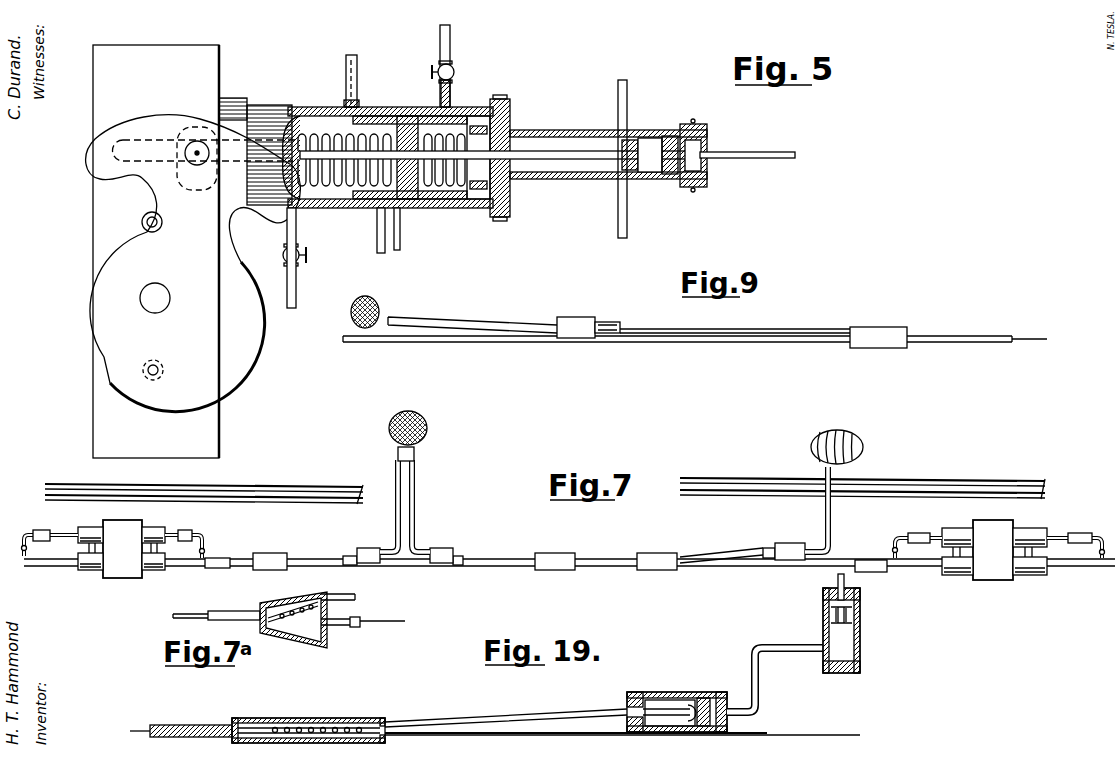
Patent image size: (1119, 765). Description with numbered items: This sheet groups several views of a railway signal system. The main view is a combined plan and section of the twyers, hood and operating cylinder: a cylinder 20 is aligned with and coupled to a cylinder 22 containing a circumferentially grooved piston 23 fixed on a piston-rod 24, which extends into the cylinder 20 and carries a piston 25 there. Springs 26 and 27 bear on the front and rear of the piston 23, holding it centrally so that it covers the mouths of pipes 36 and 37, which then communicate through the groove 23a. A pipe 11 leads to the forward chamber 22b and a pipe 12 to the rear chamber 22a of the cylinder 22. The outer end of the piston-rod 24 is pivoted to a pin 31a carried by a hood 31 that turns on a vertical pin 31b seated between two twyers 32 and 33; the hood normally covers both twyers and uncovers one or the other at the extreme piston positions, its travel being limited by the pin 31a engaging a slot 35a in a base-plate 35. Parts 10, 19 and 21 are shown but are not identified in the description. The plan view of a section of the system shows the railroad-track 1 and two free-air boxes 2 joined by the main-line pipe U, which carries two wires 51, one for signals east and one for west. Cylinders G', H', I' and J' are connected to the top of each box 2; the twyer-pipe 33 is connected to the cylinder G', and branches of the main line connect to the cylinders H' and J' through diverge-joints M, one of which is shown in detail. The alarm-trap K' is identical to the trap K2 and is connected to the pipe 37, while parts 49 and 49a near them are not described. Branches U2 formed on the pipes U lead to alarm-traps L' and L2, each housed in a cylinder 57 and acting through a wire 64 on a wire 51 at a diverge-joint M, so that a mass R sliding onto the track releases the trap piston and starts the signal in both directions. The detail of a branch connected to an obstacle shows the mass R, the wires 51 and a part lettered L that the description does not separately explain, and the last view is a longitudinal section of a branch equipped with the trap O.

In FIG. 5, the base-plate 35 is at (156, 251).
In FIG. 5, the hood 31 is at (193, 263).
In FIG. 5, the pin 31a is at (195, 152).
In FIG. 5, the vertical pin 31b is at (158, 297).
In FIG. 5, the twyer 32 is at (143, 227).
In FIG. 5, the twyer 33 is at (143, 372).
In FIG. 5, the slot 35a is at (117, 150).
In FIG. 5, the cylinder 22 is at (390, 147).
In FIG. 5, the rear chamber 22a is at (336, 120).
In FIG. 5, the forward chamber 22b is at (532, 84).
In FIG. 5, the circumferential grooved piston 23 is at (402, 206).
In FIG. 5, the circumferential groove 23a is at (421, 106).
In FIG. 5, the piston-rod 24 is at (321, 147).
In FIG. 5, the piston 25 is at (646, 180).
In FIG. 5, the spring 26 is at (340, 187).
In FIG. 5, the spring 27 is at (456, 207).
In FIG. 5, the pipe 36 is at (357, 71).
In FIG. 5, the pipe 37 is at (378, 234).
In FIG. 5, the valve 10 is at (452, 70).
In FIG. 5, the pipe 11 is at (457, 93).
In FIG. 5, the pipe 12 is at (304, 258).
In FIG. 5, the lever bar 19 is at (620, 112).
In FIG. 5, the cylinder 20 is at (580, 179).
In FIG. 5, the rod 21 is at (743, 157).
In FIG. 9, the wire 51 is at (388, 318).
In FIG. 7, the wire 51 is at (416, 452).
In FIG. 7A, the wire 51 is at (290, 612).
In FIG. 7, the cylinder 57 is at (371, 562).
In FIG. 7A, the wire 64 is at (357, 598).
In FIG. 9, the mass R is at (371, 306).
In FIG. 7, the mass R is at (635, 437).
In FIG. 9, the coupling L is at (588, 318).
In FIG. 9, the diverge-joint M is at (878, 328).
In FIG. 7, the diverge-joint M is at (465, 552).
In FIG. 7A, the diverge-joint M is at (293, 613).
In FIG. 19, the diverge-joint M is at (257, 717).
In FIG. 9, the main line pipe U is at (653, 343).
In FIG. 7, the main line pipe U is at (500, 567).
In FIG. 7A, the main line pipe U is at (342, 641).
In FIG. 19, the main line pipe U is at (516, 733).
In FIG. 7, the branch U2 is at (406, 548).
In FIG. 7, the alarm-trap L' is at (581, 543).
In FIG. 7, the second trap L2 is at (441, 547).
In FIG. 7, the trap O is at (218, 569).
In FIG. 19, the trap O is at (743, 653).
In FIG. 7, the railroad-track 1 is at (336, 466).
In FIG. 7, the air-chamber 2 is at (558, 550).
In FIG. 7, the cylinder G' is at (517, 534).
In FIG. 7, the cylinder H' is at (514, 577).
In FIG. 7, the cylinder I' is at (594, 534).
In FIG. 7, the cylinder J' is at (594, 578).
In FIG. 7, the alarm-trap K' is at (482, 536).
In FIG. 7, the alarm-trap K2 is at (633, 536).
In FIG. 7, the valve 49 is at (204, 548).
In FIG. 7, the valve 49a is at (205, 553).